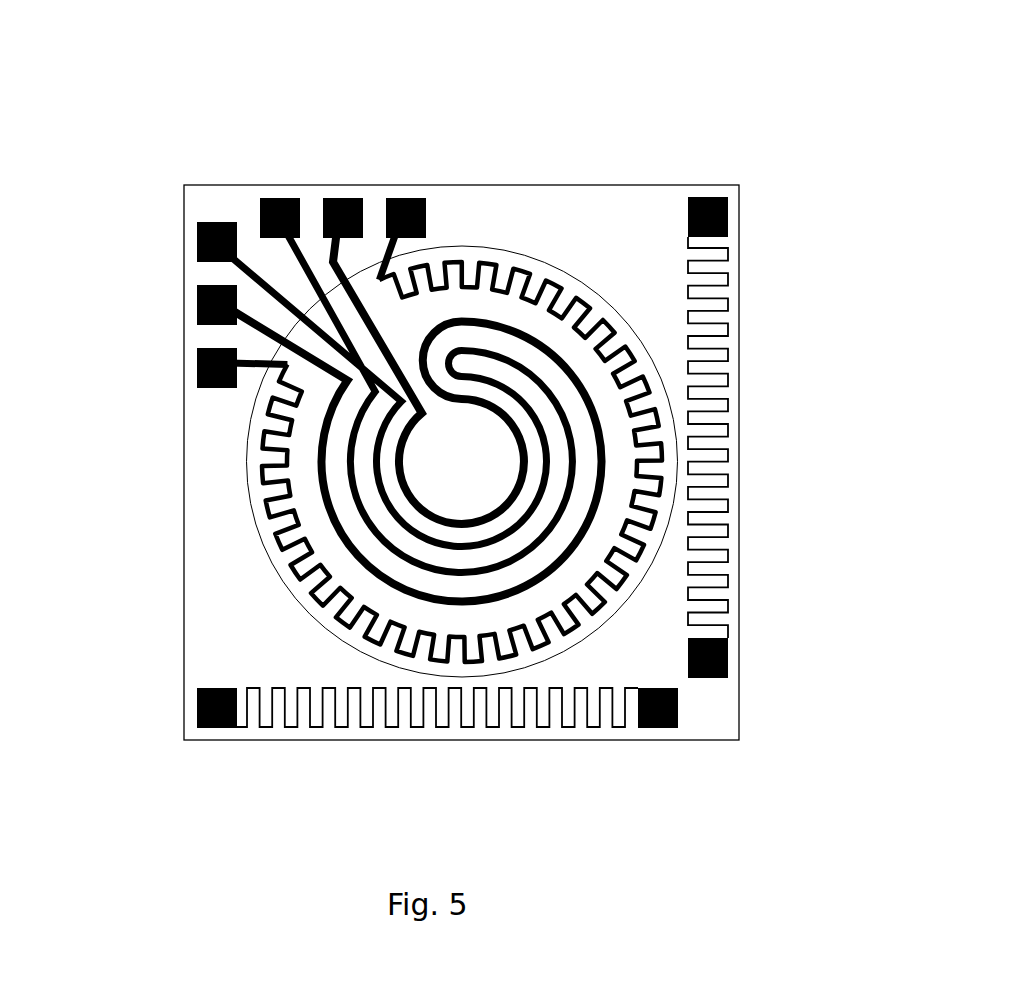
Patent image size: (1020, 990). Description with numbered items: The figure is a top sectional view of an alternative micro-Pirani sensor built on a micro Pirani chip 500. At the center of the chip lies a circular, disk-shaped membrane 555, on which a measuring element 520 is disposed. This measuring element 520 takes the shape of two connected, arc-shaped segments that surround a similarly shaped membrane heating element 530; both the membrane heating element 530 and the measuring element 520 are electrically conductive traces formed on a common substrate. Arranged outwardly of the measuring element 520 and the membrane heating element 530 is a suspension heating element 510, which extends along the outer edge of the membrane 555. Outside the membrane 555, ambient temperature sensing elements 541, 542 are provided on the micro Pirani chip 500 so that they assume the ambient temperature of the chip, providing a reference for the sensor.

The micro Pirani chip 500 is at (184, 632).
The suspension heating element 510 is at (488, 262).
The measuring element 520 is at (528, 330).
The membrane heating element 530 is at (555, 397).
The ambient temperature sensing element 541 is at (728, 282).
The ambient temperature sensing element 542 is at (565, 730).
The membrane 555 is at (260, 527).